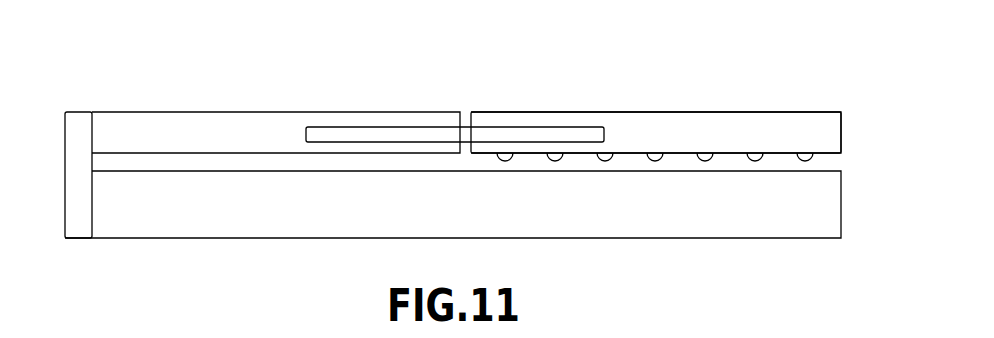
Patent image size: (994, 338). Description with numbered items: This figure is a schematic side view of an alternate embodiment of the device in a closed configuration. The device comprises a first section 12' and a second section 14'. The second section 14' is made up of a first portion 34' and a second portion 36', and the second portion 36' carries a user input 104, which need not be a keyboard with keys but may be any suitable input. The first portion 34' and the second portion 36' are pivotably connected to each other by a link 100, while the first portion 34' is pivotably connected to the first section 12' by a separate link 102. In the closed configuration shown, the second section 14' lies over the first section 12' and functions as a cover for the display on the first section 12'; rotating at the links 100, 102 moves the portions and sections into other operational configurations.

The link 102 is at (78, 222).
The first portion 34' is at (276, 110).
The second section 14' is at (656, 114).
The second portion 36' is at (656, 107).
The first section 12' is at (453, 228).
The link 100 is at (403, 133).
The user input 104 is at (812, 160).